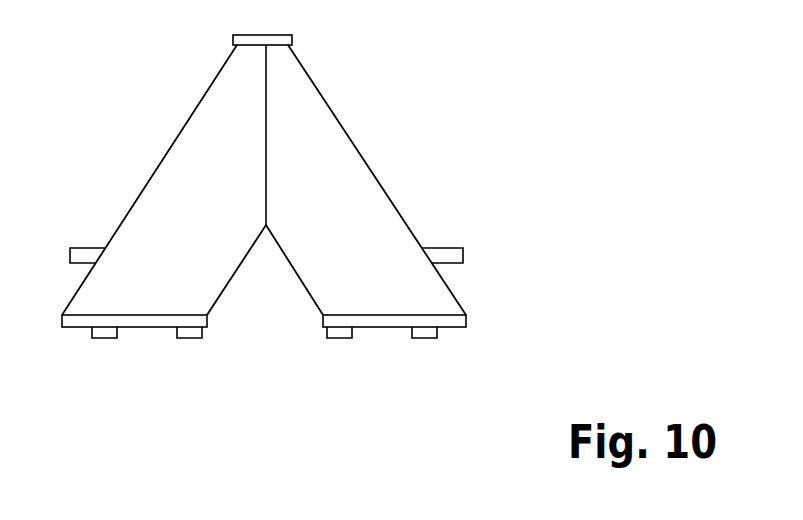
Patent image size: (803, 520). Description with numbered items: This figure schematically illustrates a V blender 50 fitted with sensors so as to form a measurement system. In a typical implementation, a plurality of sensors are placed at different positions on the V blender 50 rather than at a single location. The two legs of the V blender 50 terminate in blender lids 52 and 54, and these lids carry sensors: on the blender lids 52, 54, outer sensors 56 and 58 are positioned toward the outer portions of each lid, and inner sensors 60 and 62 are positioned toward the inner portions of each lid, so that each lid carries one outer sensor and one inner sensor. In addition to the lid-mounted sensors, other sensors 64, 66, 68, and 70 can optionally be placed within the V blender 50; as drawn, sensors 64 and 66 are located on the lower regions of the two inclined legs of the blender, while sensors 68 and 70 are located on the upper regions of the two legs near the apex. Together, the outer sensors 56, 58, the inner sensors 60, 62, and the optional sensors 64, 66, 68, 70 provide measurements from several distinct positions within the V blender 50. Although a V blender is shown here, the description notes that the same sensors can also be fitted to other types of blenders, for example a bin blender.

The V blender 50 is at (438, 88).
The blender lid 52 is at (137, 327).
The blender lid 54 is at (385, 327).
The outer sensor 56 is at (108, 338).
The outer sensor 58 is at (423, 338).
The inner sensor 60 is at (200, 338).
The inner sensor 62 is at (340, 338).
The sensor 64 is at (122, 220).
The sensor 66 is at (407, 217).
The sensor 68 is at (335, 105).
The sensor 70 is at (208, 83).